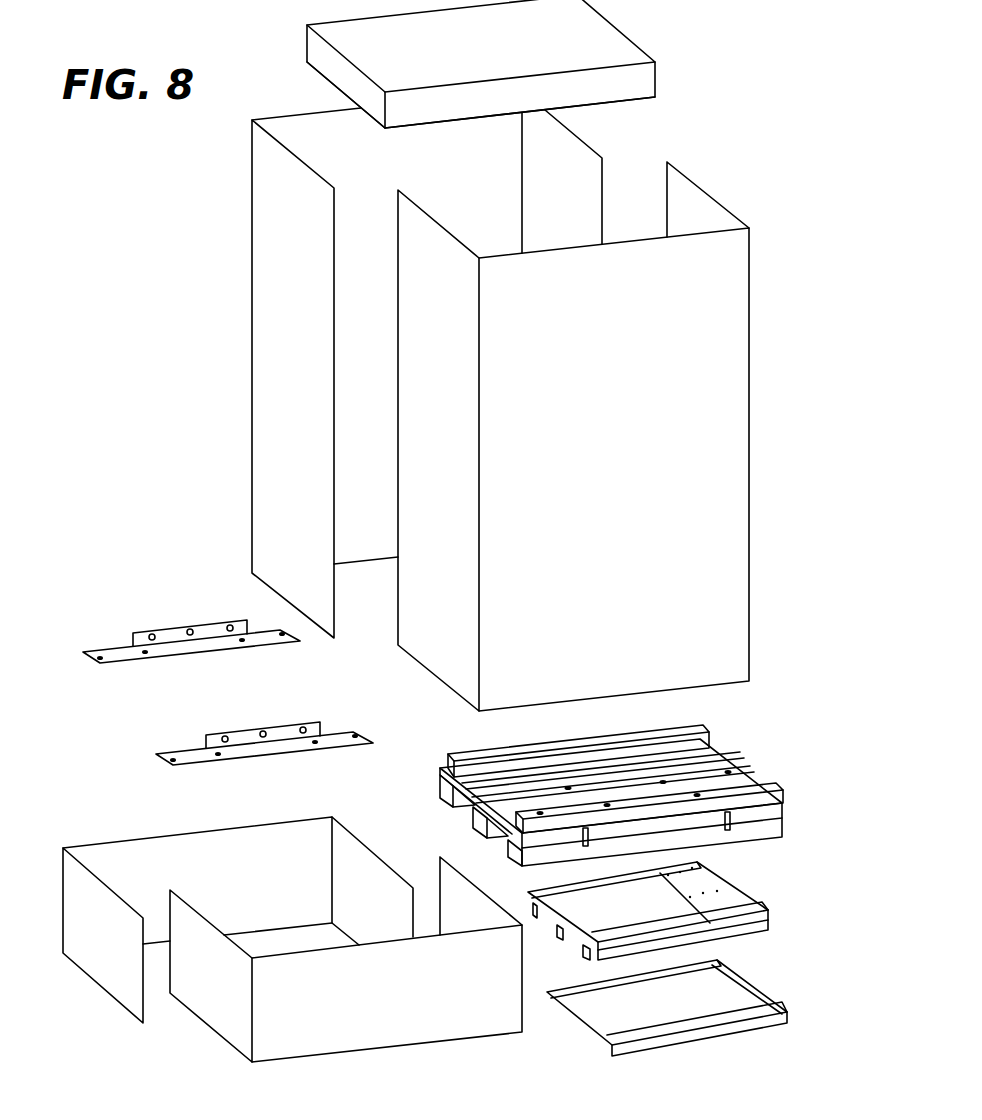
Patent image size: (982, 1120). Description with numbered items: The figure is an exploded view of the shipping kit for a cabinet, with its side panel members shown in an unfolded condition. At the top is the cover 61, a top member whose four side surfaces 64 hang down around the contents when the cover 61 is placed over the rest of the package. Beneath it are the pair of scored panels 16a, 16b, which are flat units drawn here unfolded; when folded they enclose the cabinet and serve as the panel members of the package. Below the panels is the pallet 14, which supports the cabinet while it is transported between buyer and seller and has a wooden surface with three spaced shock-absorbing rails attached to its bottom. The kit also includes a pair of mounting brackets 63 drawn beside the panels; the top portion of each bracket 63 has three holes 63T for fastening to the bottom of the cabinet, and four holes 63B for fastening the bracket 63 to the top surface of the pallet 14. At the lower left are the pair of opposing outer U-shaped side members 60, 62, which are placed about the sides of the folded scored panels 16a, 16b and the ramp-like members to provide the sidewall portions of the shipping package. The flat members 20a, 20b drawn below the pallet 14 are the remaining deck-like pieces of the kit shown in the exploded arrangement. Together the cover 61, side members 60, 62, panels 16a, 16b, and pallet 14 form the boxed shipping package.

The cover 61 is at (494, 53).
The side surfaces 64 is at (331, 68).
The scored panel 16a is at (302, 290).
The scored panel 16b is at (700, 417).
The pallet 14 is at (713, 750).
The mounting bracket 63 is at (128, 636).
The holes 63T is at (230, 625).
The holes 63B is at (280, 635).
The outer U-shaped side member 60 is at (108, 948).
The outer U-shaped side member 62 is at (330, 1021).
The first deck panel 20a is at (645, 917).
The second deck panel 20b is at (672, 1019).